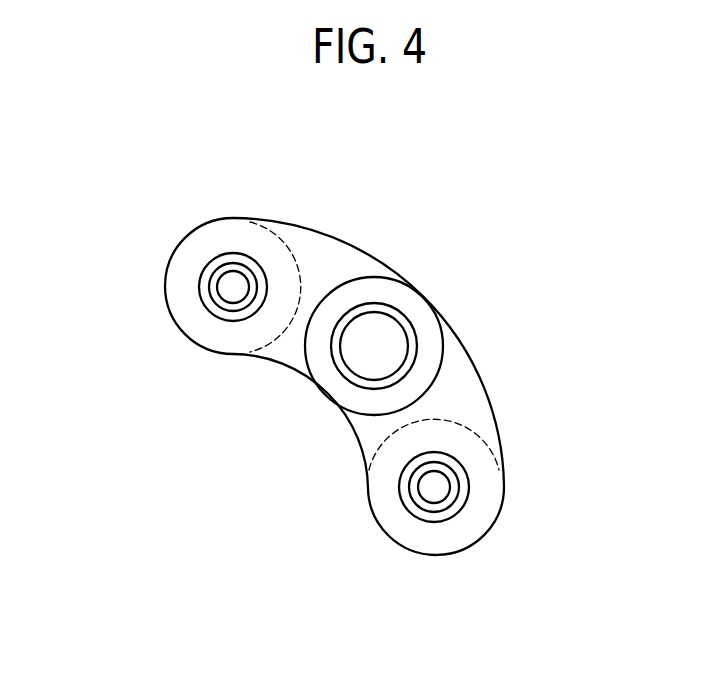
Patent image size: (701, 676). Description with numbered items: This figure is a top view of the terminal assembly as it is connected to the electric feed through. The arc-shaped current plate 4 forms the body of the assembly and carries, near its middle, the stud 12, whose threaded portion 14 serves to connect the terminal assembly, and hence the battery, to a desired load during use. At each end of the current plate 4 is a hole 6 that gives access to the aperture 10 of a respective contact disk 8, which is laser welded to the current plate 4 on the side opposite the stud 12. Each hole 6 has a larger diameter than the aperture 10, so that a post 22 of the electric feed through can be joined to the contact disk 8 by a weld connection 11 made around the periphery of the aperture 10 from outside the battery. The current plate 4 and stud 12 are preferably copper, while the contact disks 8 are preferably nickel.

The current plate 4 is at (452, 398).
The hole 6 is at (231, 322).
The contact disk 8 is at (290, 250).
The aperture 10 is at (215, 303).
The weld connection 11 is at (217, 287).
The stud 12 is at (358, 276).
The threaded portion 14 is at (410, 321).
The post 22 is at (233, 287).